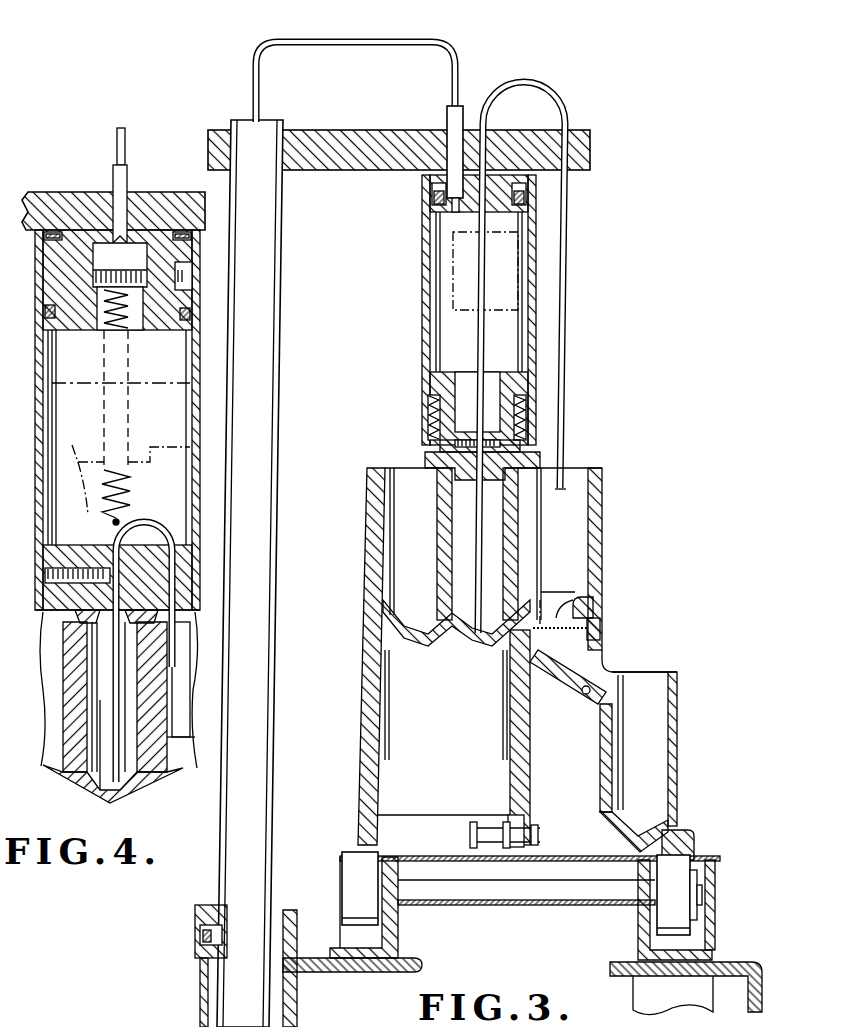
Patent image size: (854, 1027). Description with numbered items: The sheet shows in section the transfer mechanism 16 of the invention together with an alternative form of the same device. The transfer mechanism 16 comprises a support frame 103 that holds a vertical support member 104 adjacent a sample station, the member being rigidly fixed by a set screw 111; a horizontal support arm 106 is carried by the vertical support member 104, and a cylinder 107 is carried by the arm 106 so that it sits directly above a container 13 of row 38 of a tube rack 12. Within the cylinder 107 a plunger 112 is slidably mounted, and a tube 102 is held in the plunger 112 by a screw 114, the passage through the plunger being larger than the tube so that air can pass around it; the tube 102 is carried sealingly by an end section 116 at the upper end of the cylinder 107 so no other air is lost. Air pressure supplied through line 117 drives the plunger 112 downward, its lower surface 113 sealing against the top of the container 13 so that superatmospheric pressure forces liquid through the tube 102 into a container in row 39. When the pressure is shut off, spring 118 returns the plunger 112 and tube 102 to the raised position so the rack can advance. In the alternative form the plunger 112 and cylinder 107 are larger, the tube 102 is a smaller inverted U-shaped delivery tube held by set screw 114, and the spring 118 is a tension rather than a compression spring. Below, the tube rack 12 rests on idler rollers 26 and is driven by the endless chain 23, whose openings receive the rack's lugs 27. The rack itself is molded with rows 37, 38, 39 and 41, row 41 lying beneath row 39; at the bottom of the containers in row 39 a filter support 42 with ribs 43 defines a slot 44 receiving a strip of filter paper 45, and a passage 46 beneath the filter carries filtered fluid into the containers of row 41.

In FIG. 3, the tube rack 12 is at (652, 604).
In FIG. 3, the container 13 is at (436, 620).
In FIG. 4, the container 13 is at (128, 772).
In FIG. 3, the transfer mechanism 16 is at (402, 360).
In FIG. 3, the endless belt or chain 23 is at (468, 838).
In FIG. 3, the roller 26 is at (380, 926).
In FIG. 3, the lug 27 is at (516, 824).
In FIG. 3, the row 37 is at (388, 494).
In FIG. 3, the row 38 is at (495, 540).
In FIG. 3, the row 39 is at (578, 480).
In FIG. 3, the row 41 is at (650, 684).
In FIG. 3, the filter support 42 is at (600, 626).
In FIG. 3, the rib 43 is at (584, 659).
In FIG. 3, the slot 44 is at (515, 644).
In FIG. 3, the filter paper 45 is at (586, 618).
In FIG. 3, the passage 46 is at (580, 692).
In FIG. 3, the tube 102 is at (485, 338).
In FIG. 4, the tube 102 is at (110, 700).
In FIG. 3, the support frame 103 is at (300, 970).
In FIG. 3, the vertical support member 104 is at (266, 627).
In FIG. 3, the horizontal support arm 106 is at (345, 132).
In FIG. 4, the horizontal support arm 106 is at (33, 200).
In FIG. 3, the cylinder 107 is at (424, 250).
In FIG. 4, the cylinder 107 is at (197, 405).
In FIG. 3, the set screw 111 is at (198, 940).
In FIG. 3, the plunger 112 is at (517, 278).
In FIG. 4, the plunger 112 is at (85, 548).
In FIG. 3, the lower surface 113 is at (447, 478).
In FIG. 4, the lower surface 113 is at (70, 648).
In FIG. 3, the screw 114 is at (520, 438).
In FIG. 4, the screw 114 is at (70, 612).
In FIG. 3, the end section 116 is at (516, 190).
In FIG. 3, the line 117 is at (409, 42).
In FIG. 4, the line 117 is at (124, 146).
In FIG. 3, the spring 118 is at (428, 412).